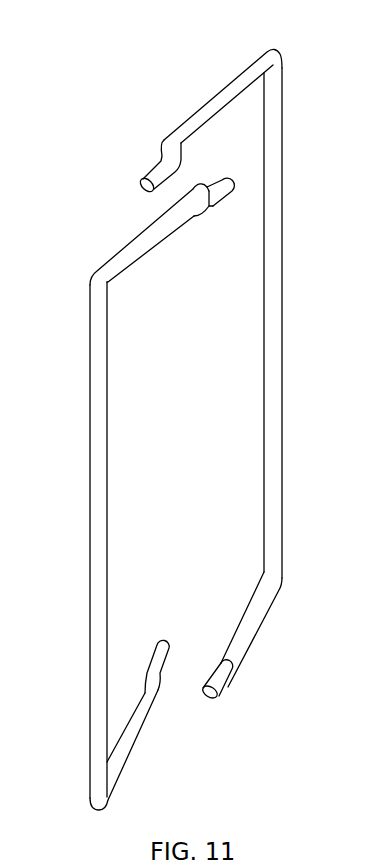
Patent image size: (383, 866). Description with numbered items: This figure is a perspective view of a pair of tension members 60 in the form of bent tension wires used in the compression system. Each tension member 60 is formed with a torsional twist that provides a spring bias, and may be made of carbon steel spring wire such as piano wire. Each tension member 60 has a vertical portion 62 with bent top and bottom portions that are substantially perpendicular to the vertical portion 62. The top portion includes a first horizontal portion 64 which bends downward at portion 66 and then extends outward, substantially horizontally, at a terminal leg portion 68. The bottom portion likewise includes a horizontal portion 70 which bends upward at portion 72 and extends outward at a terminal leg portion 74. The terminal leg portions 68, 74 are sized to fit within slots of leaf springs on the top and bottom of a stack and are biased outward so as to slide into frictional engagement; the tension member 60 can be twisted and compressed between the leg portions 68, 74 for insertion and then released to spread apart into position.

The tension member 60 is at (102, 104).
The vertical portion 62 is at (275, 265).
The first horizontal portion 64 is at (229, 82).
The downward bend portion 66 is at (163, 147).
The terminal leg portion 68 is at (151, 177).
The horizontal portion 70 is at (257, 615).
The upward bend portion 72 is at (147, 680).
The terminal leg portion 74 is at (166, 645).